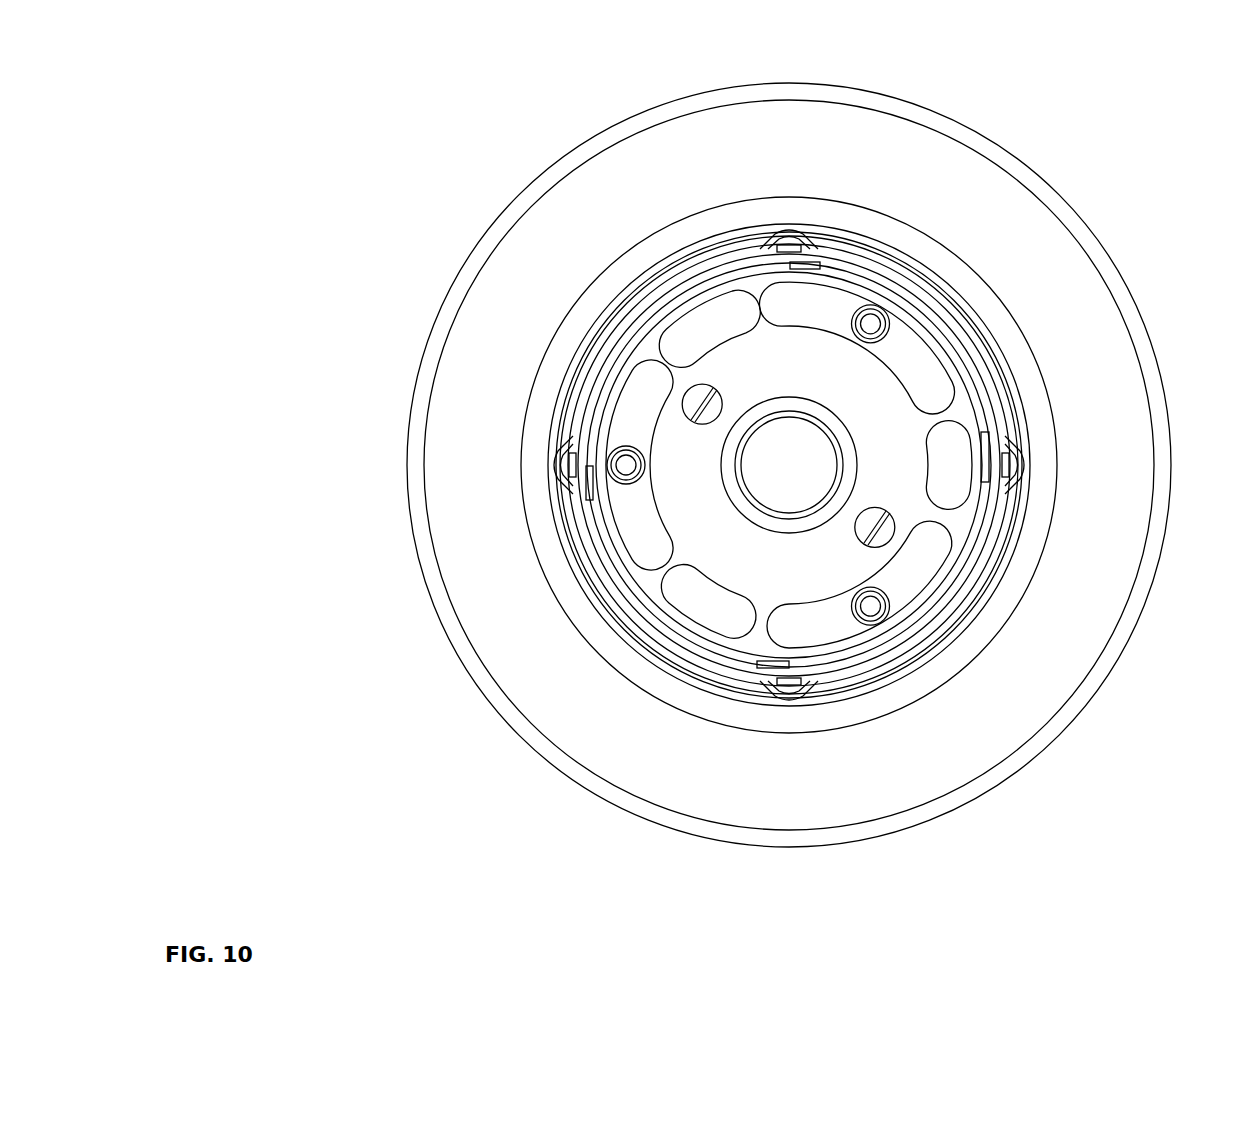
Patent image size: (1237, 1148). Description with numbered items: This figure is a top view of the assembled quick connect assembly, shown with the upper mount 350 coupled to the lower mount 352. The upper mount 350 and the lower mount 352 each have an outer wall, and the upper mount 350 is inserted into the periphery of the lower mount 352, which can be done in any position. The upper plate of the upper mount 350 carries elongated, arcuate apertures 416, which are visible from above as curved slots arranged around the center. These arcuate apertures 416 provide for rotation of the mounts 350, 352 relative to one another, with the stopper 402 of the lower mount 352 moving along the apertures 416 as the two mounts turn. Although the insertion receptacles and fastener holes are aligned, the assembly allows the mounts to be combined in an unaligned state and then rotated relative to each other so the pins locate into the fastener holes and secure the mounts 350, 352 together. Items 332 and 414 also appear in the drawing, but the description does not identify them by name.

The tire 332 is at (1040, 295).
The upper mount 350 is at (598, 538).
The lower mount 352 is at (598, 580).
The arcuate apertures 416 is at (823, 310).
The stopper 402 is at (608, 465).
The screws 414 is at (893, 521).